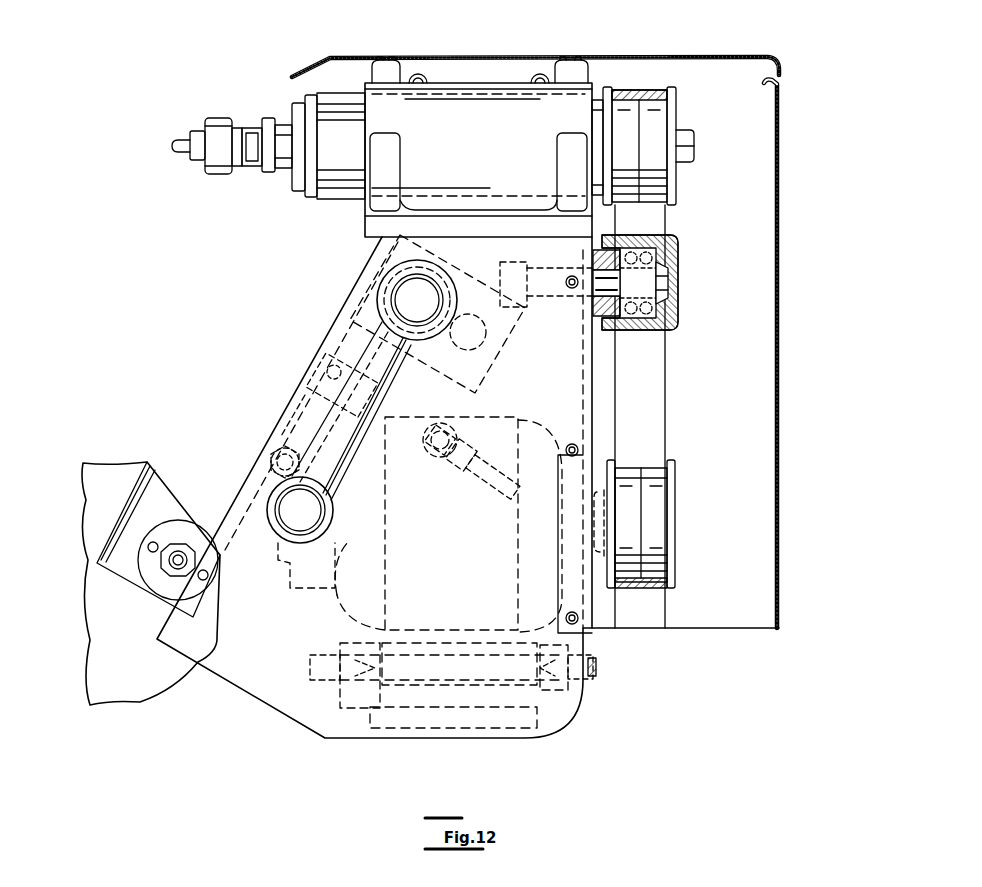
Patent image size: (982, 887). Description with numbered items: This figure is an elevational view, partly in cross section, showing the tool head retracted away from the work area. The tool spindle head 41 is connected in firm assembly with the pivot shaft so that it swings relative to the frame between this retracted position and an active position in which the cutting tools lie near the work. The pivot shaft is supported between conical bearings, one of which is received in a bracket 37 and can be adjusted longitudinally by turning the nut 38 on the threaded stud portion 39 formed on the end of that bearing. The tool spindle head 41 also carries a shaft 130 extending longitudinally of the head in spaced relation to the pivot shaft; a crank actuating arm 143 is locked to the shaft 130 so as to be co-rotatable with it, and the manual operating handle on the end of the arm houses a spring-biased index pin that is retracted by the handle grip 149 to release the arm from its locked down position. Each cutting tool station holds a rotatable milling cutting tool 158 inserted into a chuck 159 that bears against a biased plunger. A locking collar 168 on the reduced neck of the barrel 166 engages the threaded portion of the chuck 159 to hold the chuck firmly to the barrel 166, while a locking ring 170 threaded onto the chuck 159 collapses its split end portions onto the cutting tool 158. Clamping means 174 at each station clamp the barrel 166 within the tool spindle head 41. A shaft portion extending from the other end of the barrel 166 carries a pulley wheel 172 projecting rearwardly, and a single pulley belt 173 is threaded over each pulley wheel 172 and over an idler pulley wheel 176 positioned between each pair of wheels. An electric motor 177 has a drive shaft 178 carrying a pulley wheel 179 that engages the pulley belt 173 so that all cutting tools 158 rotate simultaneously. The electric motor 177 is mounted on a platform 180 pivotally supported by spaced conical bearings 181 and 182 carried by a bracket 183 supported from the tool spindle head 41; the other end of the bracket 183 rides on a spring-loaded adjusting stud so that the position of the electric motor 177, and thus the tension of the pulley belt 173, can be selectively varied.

The bracket 37 is at (147, 510).
The nut 38 is at (192, 560).
The threaded stud portion 39 is at (181, 565).
The tool spindle head 41 is at (338, 318).
The shaft 130 is at (423, 298).
The crank actuating arm 143 is at (395, 376).
The handle grip 149 is at (334, 516).
The rotatable milling cutting tool 158 is at (180, 150).
The chuck 159 is at (195, 162).
The barrel 166 is at (346, 186).
The locking collar 168 is at (267, 172).
The locking ring 170 is at (221, 175).
The pulley wheel 172 is at (678, 200).
The pulley belt 173 is at (667, 393).
The clamping means 174 is at (486, 83).
The idler pulley wheel 176 is at (680, 324).
The electric motor 177 is at (510, 417).
The drive shaft 178 is at (604, 530).
The pulley wheel 179 is at (677, 504).
The platform 180 is at (442, 660).
The conical bearing 181 is at (368, 690).
The conical bearing 182 is at (560, 700).
The bracket 183 is at (583, 697).